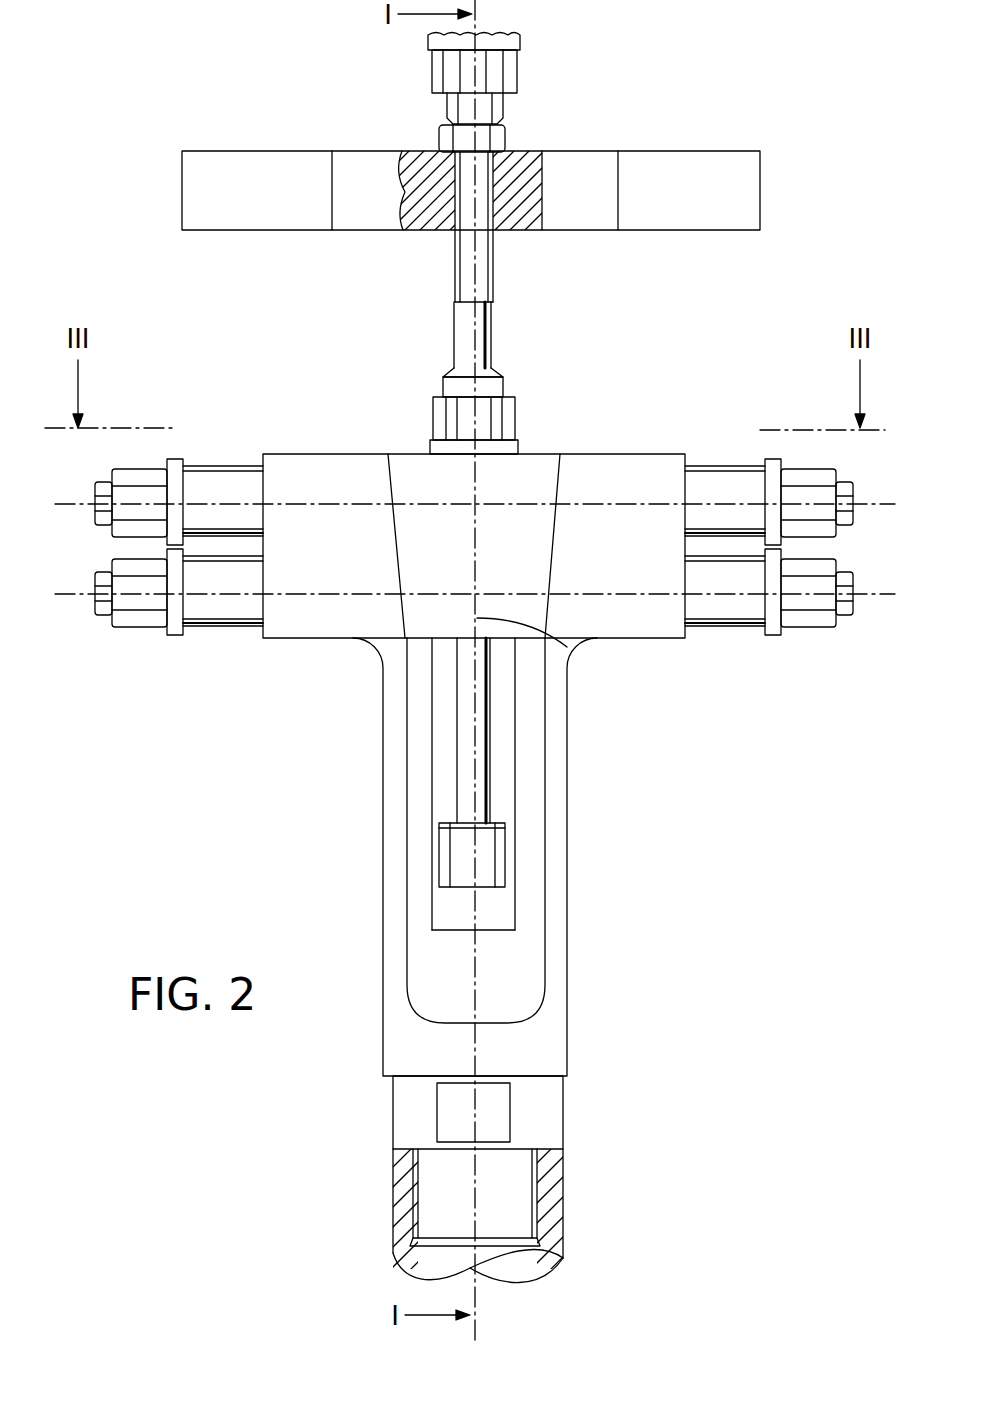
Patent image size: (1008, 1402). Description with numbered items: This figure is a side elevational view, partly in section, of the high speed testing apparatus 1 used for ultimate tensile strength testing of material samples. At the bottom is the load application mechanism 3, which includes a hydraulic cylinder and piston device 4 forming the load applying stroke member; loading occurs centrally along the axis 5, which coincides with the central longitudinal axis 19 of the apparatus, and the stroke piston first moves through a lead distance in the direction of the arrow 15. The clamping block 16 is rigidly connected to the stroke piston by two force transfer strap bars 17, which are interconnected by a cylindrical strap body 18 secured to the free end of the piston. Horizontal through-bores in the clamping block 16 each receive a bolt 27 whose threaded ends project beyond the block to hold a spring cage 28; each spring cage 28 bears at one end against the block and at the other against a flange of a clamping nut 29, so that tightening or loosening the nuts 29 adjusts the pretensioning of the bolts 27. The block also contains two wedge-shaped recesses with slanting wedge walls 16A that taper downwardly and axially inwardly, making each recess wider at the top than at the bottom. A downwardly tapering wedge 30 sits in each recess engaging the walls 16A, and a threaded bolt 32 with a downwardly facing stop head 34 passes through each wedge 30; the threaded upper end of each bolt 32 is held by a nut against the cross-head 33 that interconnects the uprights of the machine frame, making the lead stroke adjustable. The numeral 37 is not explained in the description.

The high speed testing apparatus 1 is at (700, 102).
The load application mechanism 3 is at (550, 1194).
The hydraulic cylinder and piston device 4 is at (405, 1246).
The axis 5 is at (470, 1190).
The arrow 15 is at (222, 735).
The clamping block 16 is at (312, 563).
The slanting wedge walls 16A is at (547, 548).
The force transfer strap bars 17 is at (397, 875).
The cylindrical strap body 18 is at (525, 1053).
The central longitudinal axis 19 is at (570, 643).
The bolt 27 is at (96, 505).
The spring cage 28 is at (228, 490).
The clamping nut 29 is at (143, 497).
The wedge 30 is at (413, 470).
The threaded bolt 32 is at (463, 341).
The cross-head 33 is at (257, 173).
The stop head 34 is at (487, 857).
The transverse bores 37 is at (604, 506).